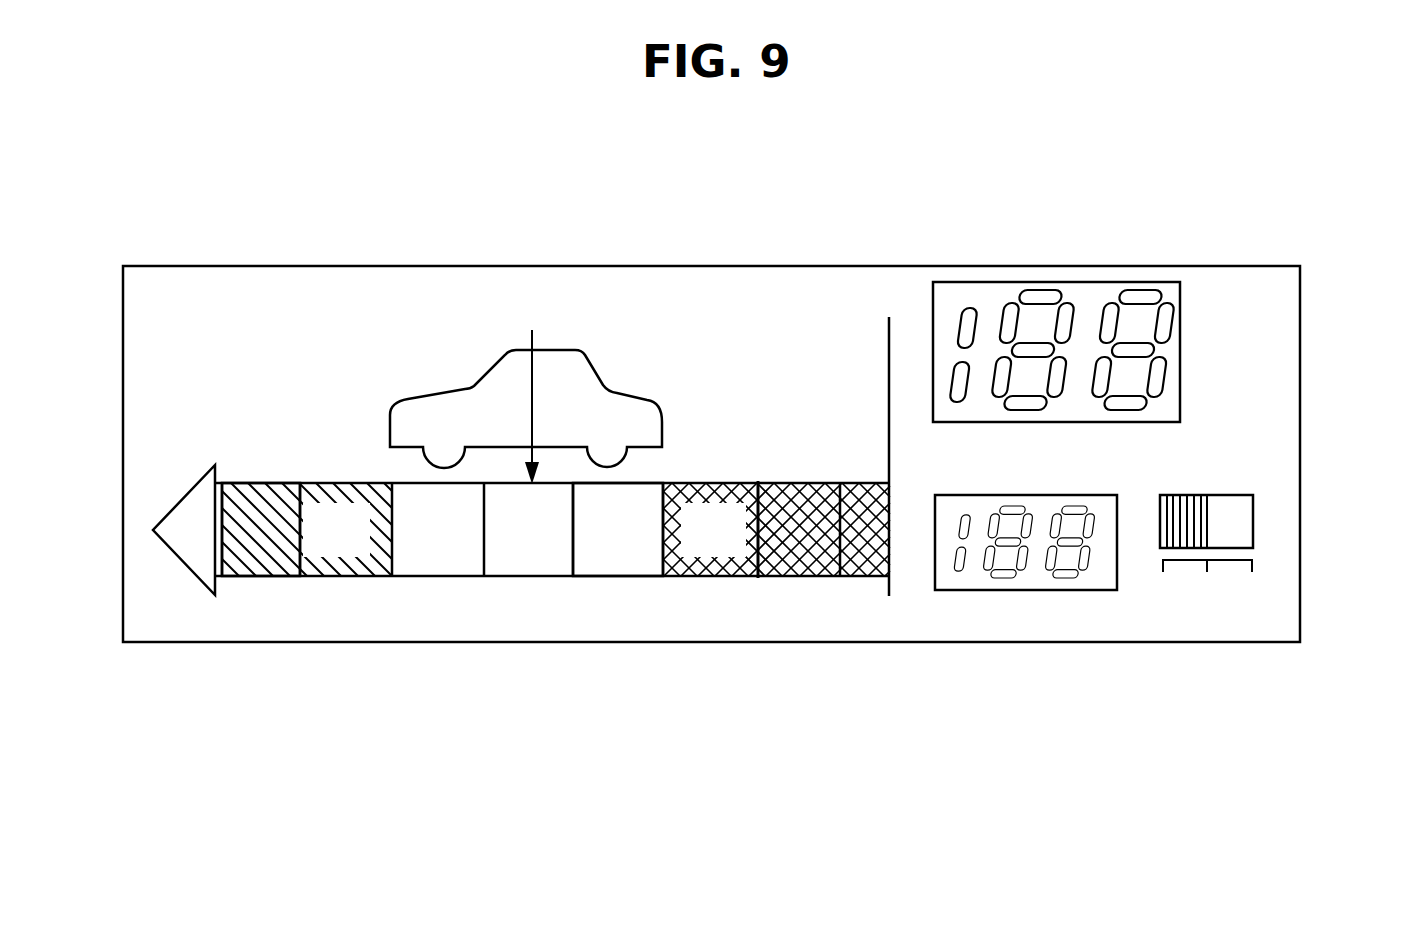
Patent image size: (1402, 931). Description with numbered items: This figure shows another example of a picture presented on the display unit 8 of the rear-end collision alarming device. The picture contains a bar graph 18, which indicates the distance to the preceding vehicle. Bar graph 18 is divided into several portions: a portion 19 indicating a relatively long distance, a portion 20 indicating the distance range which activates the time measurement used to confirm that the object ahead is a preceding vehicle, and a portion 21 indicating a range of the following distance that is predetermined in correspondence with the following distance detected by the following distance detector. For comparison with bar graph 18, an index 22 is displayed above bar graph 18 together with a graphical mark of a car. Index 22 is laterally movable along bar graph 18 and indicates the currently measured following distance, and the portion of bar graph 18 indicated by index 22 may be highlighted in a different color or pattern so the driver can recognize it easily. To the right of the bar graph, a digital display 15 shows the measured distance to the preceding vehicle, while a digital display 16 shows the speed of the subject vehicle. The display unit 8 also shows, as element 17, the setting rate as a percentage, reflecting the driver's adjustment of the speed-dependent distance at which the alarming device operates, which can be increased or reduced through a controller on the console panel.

The display unit 8 is at (281, 315).
The digital display 15 is at (1085, 282).
The digital display 16 is at (935, 598).
The setting rate display 17 is at (1253, 520).
The bar graph 18 is at (340, 605).
The portion indicating relatively long distance 19 is at (238, 498).
The portion indicating time-measurement distance range 20 is at (578, 558).
The portion indicating predetermined following distance range 21 is at (768, 483).
The index 22 is at (566, 345).